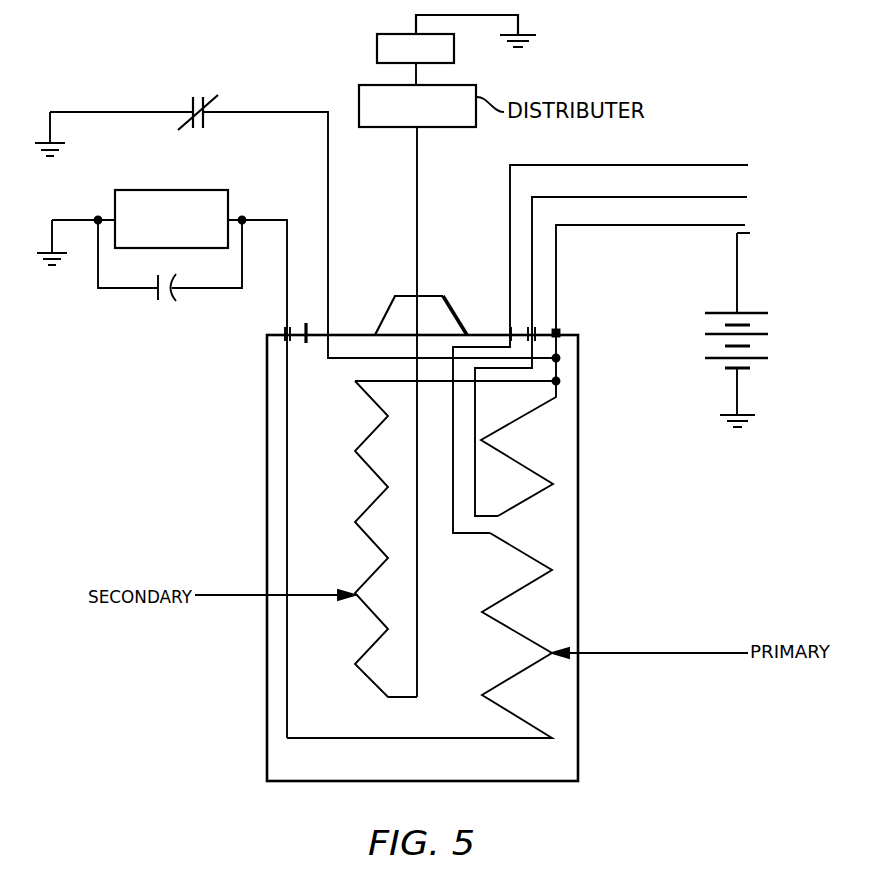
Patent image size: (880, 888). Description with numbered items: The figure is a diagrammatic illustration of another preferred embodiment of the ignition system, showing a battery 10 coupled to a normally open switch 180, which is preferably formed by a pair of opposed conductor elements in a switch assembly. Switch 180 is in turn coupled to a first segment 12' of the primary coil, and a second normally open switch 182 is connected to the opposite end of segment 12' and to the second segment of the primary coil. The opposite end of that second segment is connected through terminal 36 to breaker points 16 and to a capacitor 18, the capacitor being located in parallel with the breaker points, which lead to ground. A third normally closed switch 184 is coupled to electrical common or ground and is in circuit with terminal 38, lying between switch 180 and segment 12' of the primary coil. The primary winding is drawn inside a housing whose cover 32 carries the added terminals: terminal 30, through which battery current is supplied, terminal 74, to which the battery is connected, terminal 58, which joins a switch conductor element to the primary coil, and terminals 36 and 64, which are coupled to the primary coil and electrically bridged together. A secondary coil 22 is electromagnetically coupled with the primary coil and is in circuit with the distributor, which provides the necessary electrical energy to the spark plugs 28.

The battery 10 is at (745, 313).
The first segment of the primary coil 12' is at (523, 426).
The breaker points 16 is at (143, 192).
The capacitor 18 is at (165, 300).
The secondary coil 22 is at (360, 467).
The spark plugs 28 is at (377, 50).
The terminal 30 is at (560, 333).
The cover 32 is at (392, 297).
The terminal 36 is at (285, 333).
The terminal 38 is at (328, 333).
The terminal 58 is at (508, 332).
The terminal 64 is at (306, 343).
The terminal 74 is at (536, 332).
The normally open switch 180 is at (748, 233).
The second normally open switch 182 is at (733, 195).
The third normally closed switch 184 is at (205, 118).